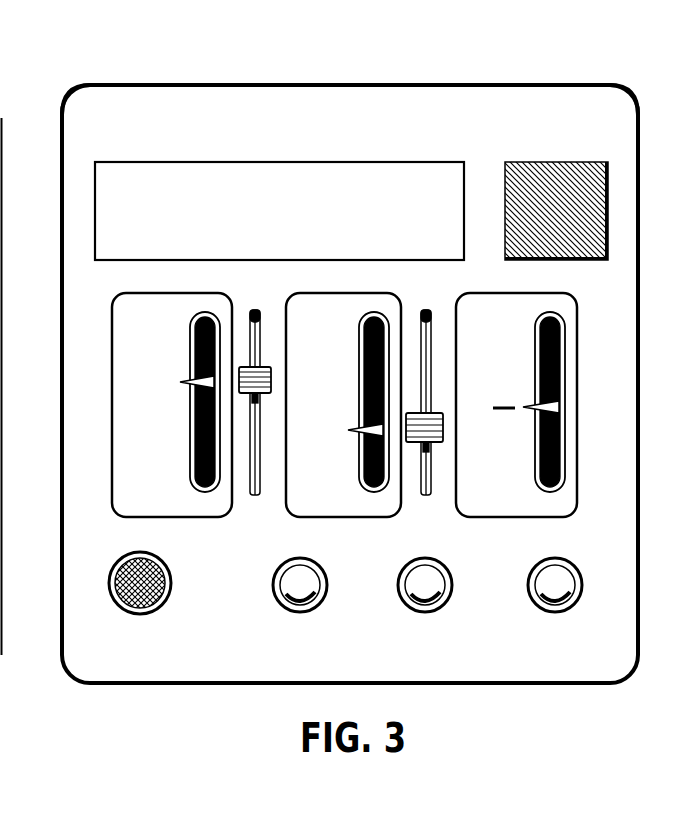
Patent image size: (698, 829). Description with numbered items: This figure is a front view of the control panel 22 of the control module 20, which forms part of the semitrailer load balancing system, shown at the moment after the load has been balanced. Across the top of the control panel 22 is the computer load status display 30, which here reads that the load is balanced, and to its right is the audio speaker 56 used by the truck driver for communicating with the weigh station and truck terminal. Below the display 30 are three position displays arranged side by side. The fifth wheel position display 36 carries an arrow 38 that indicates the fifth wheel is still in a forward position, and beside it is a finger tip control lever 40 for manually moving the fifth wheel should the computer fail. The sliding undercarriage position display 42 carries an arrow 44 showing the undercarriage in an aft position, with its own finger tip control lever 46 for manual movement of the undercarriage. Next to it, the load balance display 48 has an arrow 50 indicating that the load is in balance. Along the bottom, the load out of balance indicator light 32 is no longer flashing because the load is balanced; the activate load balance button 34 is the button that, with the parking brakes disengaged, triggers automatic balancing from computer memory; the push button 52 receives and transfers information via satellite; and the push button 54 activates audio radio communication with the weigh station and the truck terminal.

The control module 20 is at (318, 88).
The control panel 22 is at (0, 118).
The computer load status display 30 is at (103, 220).
The load out of balance indicator light 32 is at (108, 570).
The activate load balance button 34 is at (323, 604).
The fifth wheel position display 36 is at (135, 458).
The arrow 38 is at (177, 375).
The finger tip control lever 40 is at (271, 385).
The sliding undercarriage position display 42 is at (310, 300).
The arrow 44 is at (348, 424).
The finger tip control lever 46 is at (443, 441).
The load balance display 48 is at (548, 300).
The arrow 50 is at (572, 407).
The push button 52 is at (452, 604).
The push button 54 is at (580, 601).
The audio speaker 56 is at (602, 220).